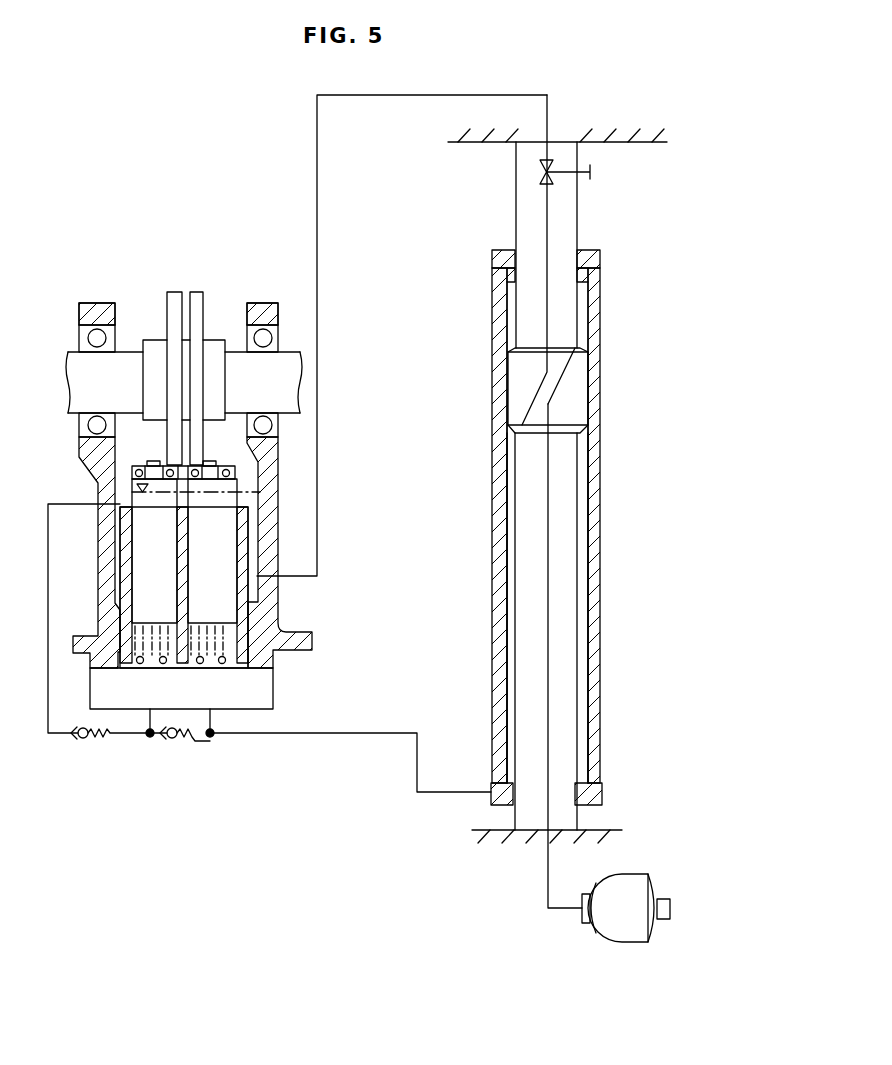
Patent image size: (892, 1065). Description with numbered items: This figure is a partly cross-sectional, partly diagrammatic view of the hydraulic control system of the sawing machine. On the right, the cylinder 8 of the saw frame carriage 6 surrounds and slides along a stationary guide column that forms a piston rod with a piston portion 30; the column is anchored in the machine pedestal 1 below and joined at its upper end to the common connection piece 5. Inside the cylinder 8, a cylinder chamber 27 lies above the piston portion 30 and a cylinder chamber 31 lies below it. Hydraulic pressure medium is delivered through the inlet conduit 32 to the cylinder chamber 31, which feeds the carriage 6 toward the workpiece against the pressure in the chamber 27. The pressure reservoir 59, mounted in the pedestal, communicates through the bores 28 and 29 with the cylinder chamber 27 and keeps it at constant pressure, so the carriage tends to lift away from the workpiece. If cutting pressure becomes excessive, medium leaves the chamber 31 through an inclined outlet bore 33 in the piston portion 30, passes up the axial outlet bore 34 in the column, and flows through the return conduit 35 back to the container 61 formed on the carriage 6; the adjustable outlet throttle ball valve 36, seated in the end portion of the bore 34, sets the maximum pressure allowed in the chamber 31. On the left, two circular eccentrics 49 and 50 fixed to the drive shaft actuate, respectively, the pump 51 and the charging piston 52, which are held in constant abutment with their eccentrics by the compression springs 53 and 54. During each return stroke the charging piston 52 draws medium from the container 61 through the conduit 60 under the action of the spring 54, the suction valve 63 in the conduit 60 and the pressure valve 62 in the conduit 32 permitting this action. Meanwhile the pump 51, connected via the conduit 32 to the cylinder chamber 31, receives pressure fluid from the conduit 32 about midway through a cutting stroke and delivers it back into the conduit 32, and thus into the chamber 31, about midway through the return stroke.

The machine pedestal 1 is at (587, 842).
The common connection piece 5 is at (575, 132).
The saw frame carriage 6 is at (290, 642).
The cylinder 8 is at (593, 291).
The cylinder chamber 27 is at (585, 323).
The bore 28 is at (547, 623).
The bore 29 is at (570, 372).
The piston portion 30 is at (573, 407).
The cylinder chamber 31 is at (582, 483).
The inlet conduit 32 is at (340, 737).
The inclined outlet bore 33 is at (523, 404).
The axial outlet bore 34 is at (547, 220).
The return conduit 35 is at (317, 183).
The adjustable outlet throttle ball valve 36 is at (590, 172).
The eccentric 49 is at (197, 300).
The eccentric 50 is at (172, 300).
The pump 51 is at (240, 483).
The charging piston 52 is at (155, 562).
The compression spring 53 is at (220, 635).
The compression spring 54 is at (167, 669).
The pressure reservoir 59 is at (632, 938).
The conduit 60 is at (73, 505).
The container 61 is at (257, 520).
The pressure valve 62 is at (178, 745).
The suction valve 63 is at (88, 745).